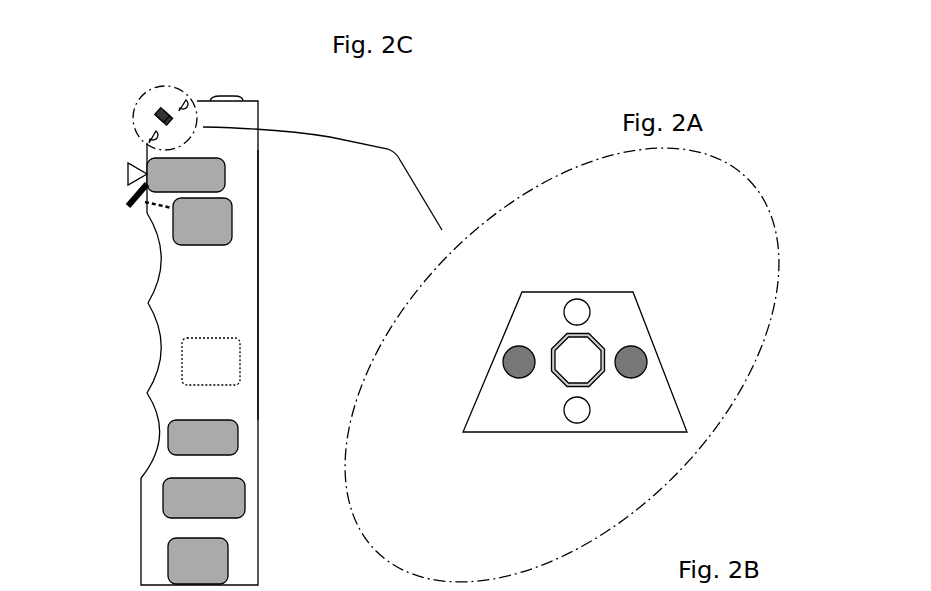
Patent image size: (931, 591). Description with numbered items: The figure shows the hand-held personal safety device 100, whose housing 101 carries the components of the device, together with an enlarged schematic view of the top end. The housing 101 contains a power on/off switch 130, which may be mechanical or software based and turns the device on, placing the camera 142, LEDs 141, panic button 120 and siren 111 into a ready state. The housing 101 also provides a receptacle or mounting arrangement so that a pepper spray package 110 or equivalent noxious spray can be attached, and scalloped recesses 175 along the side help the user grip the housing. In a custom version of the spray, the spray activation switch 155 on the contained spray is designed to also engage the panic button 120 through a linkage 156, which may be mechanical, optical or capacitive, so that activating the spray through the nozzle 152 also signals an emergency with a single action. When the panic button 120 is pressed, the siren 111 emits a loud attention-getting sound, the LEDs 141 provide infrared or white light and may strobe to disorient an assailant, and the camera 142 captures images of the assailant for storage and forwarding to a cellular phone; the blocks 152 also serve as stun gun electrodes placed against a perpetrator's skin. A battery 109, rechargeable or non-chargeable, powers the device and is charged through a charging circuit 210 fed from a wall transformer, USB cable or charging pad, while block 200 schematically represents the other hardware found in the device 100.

In FIG. 2C, the personal safety device 100 is at (150, 343).
In FIG. 2C, the housing 101 is at (232, 287).
In FIG. 2C, the battery 109 is at (160, 438).
In FIG. 2C, the pepper spray package 110 is at (233, 175).
In FIG. 2C, the siren 111 is at (230, 73).
In FIG. 2C, the panic button 120 is at (168, 227).
In FIG. 2C, the power on/off switch 130 is at (157, 560).
In FIG. 2C, the LEDs 141 is at (148, 140).
In FIG. 2A, the LEDs 141 is at (557, 413).
In FIG. 2C, the camera 142 is at (153, 123).
In FIG. 2A, the camera 142 is at (580, 368).
In FIG. 2C, the nozzle / stun gun electrodes 152 is at (163, 103).
In FIG. 2A, the nozzle / stun gun electrodes 152 is at (623, 333).
In FIG. 2C, the spray activation switch 155 is at (122, 205).
In FIG. 2C, the linkage 156 is at (150, 208).
In FIG. 2C, the scalloped recesses 175 is at (155, 340).
In FIG. 2C, the other hardware block 200 is at (211, 361).
In FIG. 2C, the charging circuit 210 is at (160, 497).